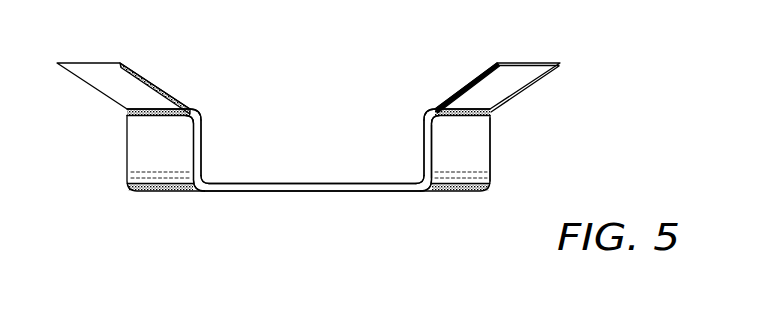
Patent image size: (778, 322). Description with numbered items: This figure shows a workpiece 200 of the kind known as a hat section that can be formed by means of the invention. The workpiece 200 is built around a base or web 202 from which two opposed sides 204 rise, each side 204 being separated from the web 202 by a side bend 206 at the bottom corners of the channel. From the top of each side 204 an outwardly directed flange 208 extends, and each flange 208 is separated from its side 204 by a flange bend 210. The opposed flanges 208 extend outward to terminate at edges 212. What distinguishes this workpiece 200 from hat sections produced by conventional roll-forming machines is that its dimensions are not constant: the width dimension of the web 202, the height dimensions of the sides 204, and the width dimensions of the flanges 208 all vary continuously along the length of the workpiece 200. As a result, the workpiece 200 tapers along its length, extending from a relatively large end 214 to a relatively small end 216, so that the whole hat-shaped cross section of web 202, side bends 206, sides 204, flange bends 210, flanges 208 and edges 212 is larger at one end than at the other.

The workpiece 200 is at (321, 92).
The web 202 is at (313, 192).
The sides 204 is at (198, 141).
The side bends 206 is at (206, 180).
The flanges 208 is at (155, 115).
The flange bend 210 is at (188, 118).
The edges 212 is at (97, 90).
The relatively large end 214 is at (501, 165).
The relatively small end 216 is at (441, 172).